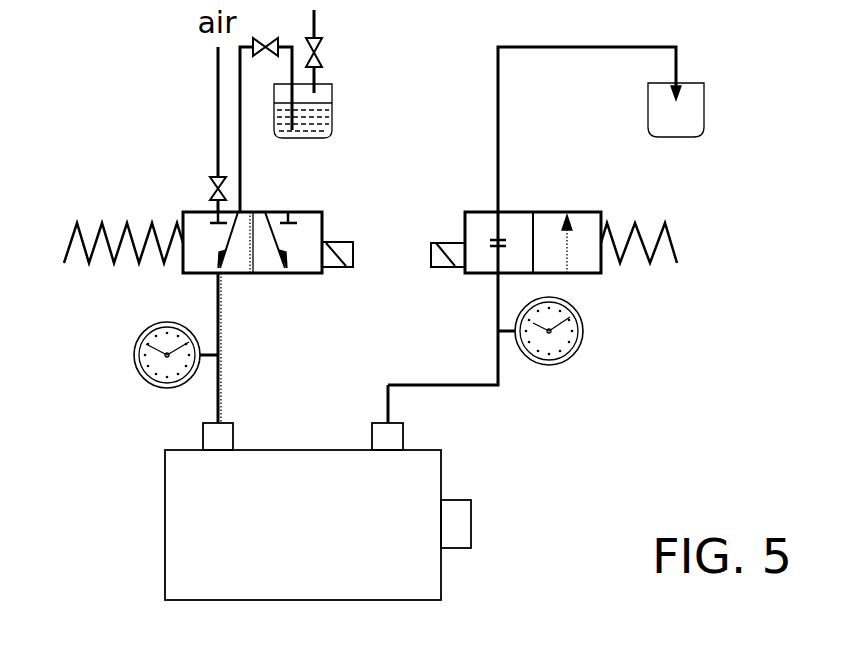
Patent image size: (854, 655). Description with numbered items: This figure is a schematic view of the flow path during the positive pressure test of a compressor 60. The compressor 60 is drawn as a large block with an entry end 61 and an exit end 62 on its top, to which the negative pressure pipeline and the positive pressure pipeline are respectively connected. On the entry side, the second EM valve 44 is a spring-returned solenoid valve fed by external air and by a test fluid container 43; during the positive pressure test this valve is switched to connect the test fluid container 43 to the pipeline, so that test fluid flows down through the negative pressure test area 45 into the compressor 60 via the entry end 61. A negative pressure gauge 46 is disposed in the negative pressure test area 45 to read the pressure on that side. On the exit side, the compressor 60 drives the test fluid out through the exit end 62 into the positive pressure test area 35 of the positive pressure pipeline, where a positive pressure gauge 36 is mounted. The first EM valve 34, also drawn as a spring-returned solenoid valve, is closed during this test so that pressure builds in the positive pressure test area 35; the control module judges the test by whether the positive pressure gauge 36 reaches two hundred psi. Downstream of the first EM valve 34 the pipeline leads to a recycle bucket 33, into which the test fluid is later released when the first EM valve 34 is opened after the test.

The recycle bucket 33 is at (697, 112).
The first EM valve 34 is at (478, 212).
The positive pressure test area 35 is at (502, 375).
The positive pressure gauge 36 is at (583, 318).
The test fluid container 43 is at (333, 94).
The second EM valve 44 is at (185, 212).
The negative pressure test area 45 is at (220, 330).
The negative pressure gauge 46 is at (140, 338).
The compressor 60 is at (163, 520).
The entry end 61 is at (222, 423).
The exit end 62 is at (385, 423).